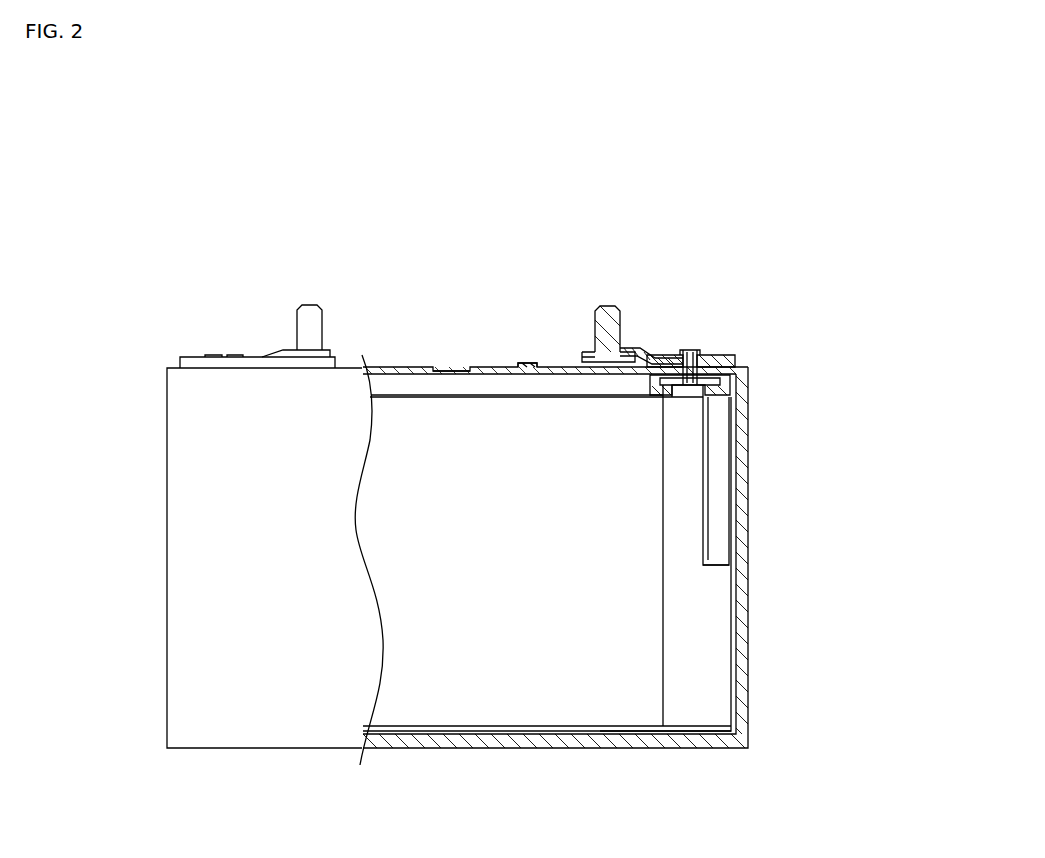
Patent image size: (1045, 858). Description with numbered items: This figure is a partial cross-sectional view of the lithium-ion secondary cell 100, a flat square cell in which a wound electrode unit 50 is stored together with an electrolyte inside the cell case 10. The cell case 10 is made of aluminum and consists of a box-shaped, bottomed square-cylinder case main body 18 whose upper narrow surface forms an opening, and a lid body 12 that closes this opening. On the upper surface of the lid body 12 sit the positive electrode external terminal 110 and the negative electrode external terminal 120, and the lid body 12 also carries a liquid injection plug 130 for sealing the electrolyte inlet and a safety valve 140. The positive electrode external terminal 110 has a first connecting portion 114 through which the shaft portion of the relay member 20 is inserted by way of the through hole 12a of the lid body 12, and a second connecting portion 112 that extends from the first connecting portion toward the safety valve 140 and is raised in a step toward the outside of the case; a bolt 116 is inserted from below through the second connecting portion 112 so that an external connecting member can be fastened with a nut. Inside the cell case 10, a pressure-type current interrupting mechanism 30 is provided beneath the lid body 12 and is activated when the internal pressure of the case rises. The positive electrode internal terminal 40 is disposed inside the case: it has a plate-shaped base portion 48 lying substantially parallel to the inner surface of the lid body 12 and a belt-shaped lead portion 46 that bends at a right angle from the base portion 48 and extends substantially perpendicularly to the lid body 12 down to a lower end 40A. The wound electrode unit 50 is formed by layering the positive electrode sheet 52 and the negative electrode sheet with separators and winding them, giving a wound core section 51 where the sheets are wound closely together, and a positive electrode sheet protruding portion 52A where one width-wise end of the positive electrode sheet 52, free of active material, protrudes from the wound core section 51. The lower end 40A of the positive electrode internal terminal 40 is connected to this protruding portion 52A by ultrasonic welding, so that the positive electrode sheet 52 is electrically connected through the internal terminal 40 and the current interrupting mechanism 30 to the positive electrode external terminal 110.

The lithium-ion secondary cell 100 is at (808, 183).
The cell case 10 is at (750, 659).
The case main body 18 is at (749, 626).
The lid body 12 is at (752, 367).
The through hole 12a is at (698, 355).
The relay member 20 is at (684, 352).
The current interrupting mechanism 30 is at (740, 378).
The positive electrode internal terminal 40 is at (733, 525).
The lower end 40A is at (717, 553).
The lead portion 46 is at (718, 472).
The base portion 48 is at (670, 400).
The wound electrode unit 50 is at (513, 703).
The wound core section 51 is at (442, 708).
The positive electrode sheet 52 is at (732, 703).
The positive electrode sheet protruding portion 52A is at (693, 710).
The positive electrode external terminal 110 is at (655, 352).
The second connecting portion 112 is at (630, 350).
The first connecting portion 114 is at (727, 356).
The bolt 116 is at (607, 304).
The negative electrode external terminal 120 is at (283, 351).
The liquid injection plug 130 is at (528, 363).
The safety valve 140 is at (450, 368).